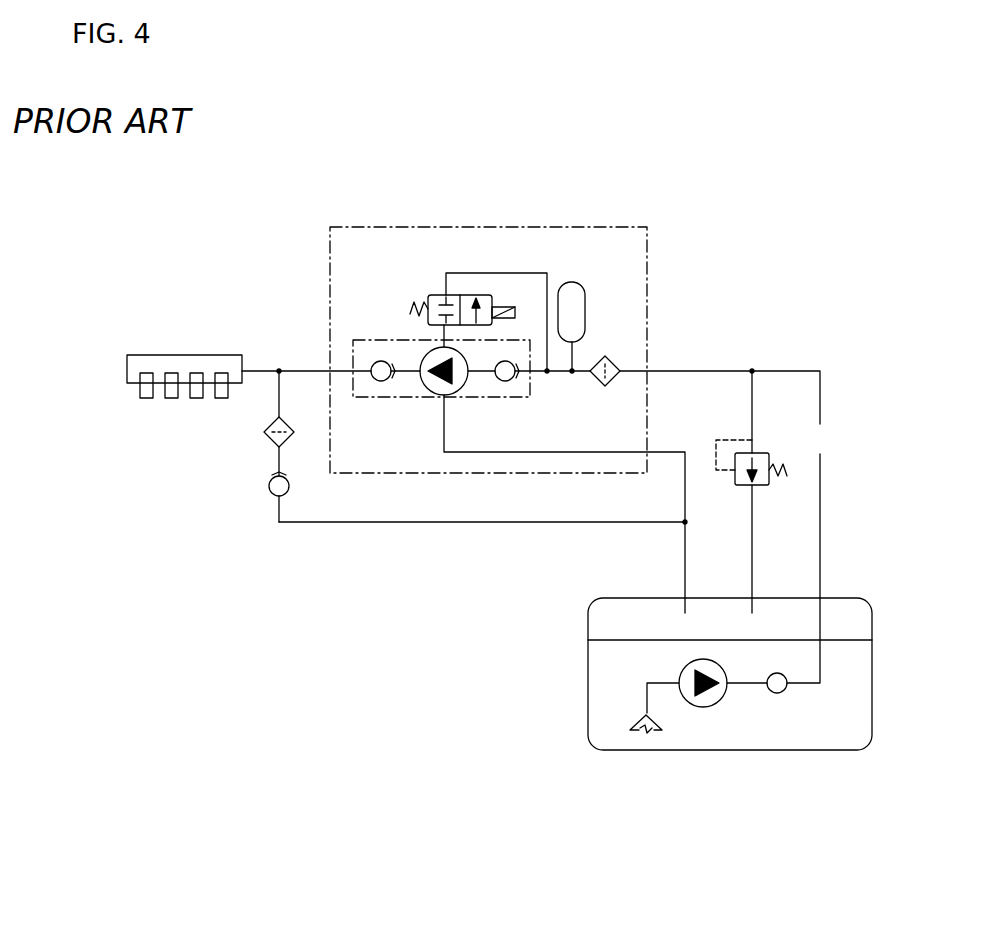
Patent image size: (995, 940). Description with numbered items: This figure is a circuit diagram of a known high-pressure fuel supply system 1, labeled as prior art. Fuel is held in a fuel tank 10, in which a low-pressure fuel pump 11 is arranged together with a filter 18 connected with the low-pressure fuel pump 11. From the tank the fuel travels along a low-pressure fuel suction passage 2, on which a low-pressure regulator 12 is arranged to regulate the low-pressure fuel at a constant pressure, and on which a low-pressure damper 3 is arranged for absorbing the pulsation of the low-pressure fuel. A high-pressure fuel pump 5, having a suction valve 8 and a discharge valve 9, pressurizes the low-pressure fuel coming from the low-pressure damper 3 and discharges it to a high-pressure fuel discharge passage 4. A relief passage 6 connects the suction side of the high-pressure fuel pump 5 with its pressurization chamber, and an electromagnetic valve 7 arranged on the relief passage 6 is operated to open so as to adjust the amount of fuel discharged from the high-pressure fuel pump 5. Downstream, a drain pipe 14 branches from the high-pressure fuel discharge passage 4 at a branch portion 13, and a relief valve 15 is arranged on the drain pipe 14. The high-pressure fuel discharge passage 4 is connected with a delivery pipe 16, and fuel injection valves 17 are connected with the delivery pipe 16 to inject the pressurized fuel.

The high-pressure fuel supply system 1 is at (583, 222).
The low-pressure fuel suction passage 2 is at (688, 371).
The low-pressure damper 3 is at (585, 300).
The high-pressure fuel discharge passage 4 is at (402, 368).
The high-pressure fuel pump 5 is at (371, 338).
The relief passage 6 is at (503, 273).
The electromagnetic valve 7 is at (462, 295).
The suction valve 8 is at (510, 382).
The discharge valve 9 is at (383, 382).
The fuel tank 10 is at (818, 750).
The low-pressure fuel pump 11 is at (700, 708).
The low-pressure regulator 12 is at (757, 453).
The branch portion 13 is at (279, 368).
The drain pipe 14 is at (276, 403).
The relief valve 15 is at (270, 493).
The delivery pipe 16 is at (190, 355).
The fuel injection valves 17 is at (145, 398).
The filter 18 is at (646, 735).